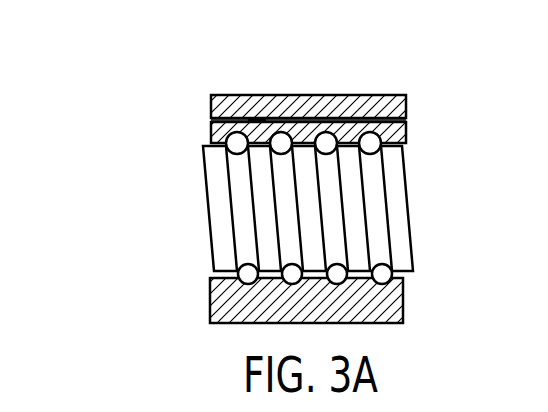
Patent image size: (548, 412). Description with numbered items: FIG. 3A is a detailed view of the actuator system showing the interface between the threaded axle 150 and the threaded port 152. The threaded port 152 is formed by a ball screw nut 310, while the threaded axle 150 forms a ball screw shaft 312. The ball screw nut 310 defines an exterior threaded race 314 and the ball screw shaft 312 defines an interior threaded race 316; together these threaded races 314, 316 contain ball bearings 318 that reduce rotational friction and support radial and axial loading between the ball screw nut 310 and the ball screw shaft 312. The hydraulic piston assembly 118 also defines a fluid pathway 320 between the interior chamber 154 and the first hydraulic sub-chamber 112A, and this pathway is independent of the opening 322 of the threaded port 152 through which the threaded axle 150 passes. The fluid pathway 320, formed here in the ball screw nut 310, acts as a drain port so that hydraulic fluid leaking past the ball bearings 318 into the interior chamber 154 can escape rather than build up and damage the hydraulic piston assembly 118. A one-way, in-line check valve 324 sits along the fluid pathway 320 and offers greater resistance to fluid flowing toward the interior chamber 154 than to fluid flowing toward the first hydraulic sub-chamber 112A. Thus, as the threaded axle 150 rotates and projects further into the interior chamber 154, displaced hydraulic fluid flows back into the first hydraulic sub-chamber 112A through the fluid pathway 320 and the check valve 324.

The first hydraulic sub-chamber 112A is at (121, 111).
The hydraulic piston assembly 118 is at (324, 106).
The threaded axle 150 is at (218, 211).
The threaded port 152 is at (404, 140).
The interior chamber 154 is at (446, 130).
The ball screw nut 310 is at (222, 108).
The ball screw shaft 312 is at (218, 226).
The exterior threaded race 314 is at (385, 284).
The interior threaded race 316 is at (383, 262).
The ball bearings 318 is at (386, 271).
The fluid pathway 320 is at (390, 118).
The opening 322 is at (193, 187).
The in-line check valve 324 is at (255, 120).